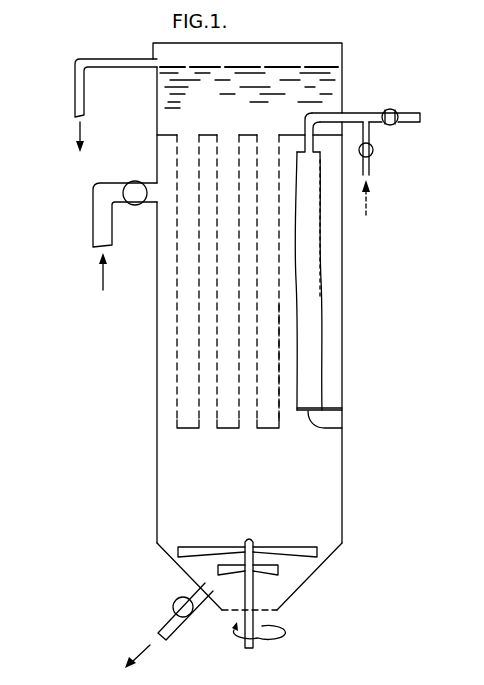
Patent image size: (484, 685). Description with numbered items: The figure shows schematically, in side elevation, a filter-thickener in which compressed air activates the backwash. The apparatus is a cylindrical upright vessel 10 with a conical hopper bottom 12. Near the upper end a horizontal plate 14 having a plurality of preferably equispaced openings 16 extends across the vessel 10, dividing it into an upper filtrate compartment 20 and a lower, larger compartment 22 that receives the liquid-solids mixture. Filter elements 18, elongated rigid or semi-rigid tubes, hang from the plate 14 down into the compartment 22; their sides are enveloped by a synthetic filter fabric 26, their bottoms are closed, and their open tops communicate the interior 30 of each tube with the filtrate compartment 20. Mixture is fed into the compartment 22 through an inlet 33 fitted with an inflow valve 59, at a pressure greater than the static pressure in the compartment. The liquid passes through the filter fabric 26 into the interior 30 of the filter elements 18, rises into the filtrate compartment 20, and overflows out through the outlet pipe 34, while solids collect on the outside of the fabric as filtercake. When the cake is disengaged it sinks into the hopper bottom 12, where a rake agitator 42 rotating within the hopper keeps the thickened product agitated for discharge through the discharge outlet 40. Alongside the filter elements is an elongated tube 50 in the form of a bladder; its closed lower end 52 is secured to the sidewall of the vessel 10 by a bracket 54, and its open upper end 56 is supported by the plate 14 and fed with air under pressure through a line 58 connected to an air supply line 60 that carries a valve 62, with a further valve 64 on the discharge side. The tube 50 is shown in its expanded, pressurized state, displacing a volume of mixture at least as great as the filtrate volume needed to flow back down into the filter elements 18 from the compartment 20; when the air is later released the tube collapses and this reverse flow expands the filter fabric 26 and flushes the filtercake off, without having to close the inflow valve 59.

The vessel 10 is at (342, 331).
The conical hopper bottom 12 is at (307, 576).
The horizontal plate 14 is at (249, 136).
The openings 16 is at (269, 137).
The filter elements 18 is at (218, 332).
The upper filtrate compartment 20 is at (244, 107).
The lower compartment 22 is at (256, 476).
The filter fabric 26 is at (283, 292).
The interior of the tubes 30 is at (227, 262).
The inlet 33 is at (93, 213).
The outlet pipe 34 is at (123, 67).
The discharge outlet 40 is at (172, 628).
The rake agitator 42 is at (318, 548).
The elongated tube 50 is at (322, 314).
The lower end 52 is at (342, 428).
The bracket 54 is at (332, 406).
The upper end 56 is at (318, 168).
The line 58 is at (343, 113).
The inflow valve 59 is at (130, 182).
The air supply line 60 is at (372, 172).
The valve 62 is at (373, 150).
The valve 64 is at (395, 110).